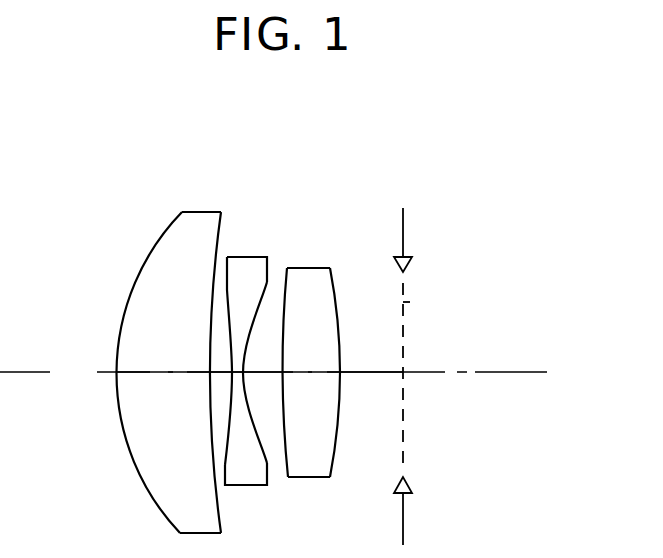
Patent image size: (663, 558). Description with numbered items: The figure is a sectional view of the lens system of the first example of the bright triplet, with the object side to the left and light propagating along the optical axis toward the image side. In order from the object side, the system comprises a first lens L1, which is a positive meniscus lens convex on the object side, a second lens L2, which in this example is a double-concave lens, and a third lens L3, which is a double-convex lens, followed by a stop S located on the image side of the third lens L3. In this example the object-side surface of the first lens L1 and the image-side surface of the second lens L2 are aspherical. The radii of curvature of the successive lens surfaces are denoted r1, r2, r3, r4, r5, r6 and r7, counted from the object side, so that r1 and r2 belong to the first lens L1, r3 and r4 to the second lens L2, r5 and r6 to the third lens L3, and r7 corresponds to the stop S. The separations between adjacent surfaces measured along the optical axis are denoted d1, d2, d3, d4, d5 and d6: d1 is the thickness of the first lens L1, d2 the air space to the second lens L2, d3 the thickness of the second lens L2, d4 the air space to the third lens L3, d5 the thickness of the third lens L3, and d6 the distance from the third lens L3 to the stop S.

The first lens L1 is at (171, 324).
The second lens L2 is at (267, 300).
The third lens L3 is at (330, 296).
The stop S is at (428, 330).
The radius of curvature of the first lens surface r1 is at (141, 268).
The radius of curvature of the second lens surface r2 is at (215, 292).
The radius of curvature of the third lens surface r3 is at (228, 288).
The radius of curvature of the fourth lens surface r4 is at (265, 293).
The radius of curvature of the fifth lens surface r5 is at (283, 293).
The radius of curvature of the sixth lens surface r6 is at (334, 290).
The radius of curvature of the stop surface r7 is at (410, 302).
The separation between the first and second lens surfaces d1 is at (148, 372).
The separation between the second and third lens surfaces d2 is at (223, 372).
The separation between the third and fourth lens surfaces d3 is at (238, 372).
The separation between the fourth and fifth lens surfaces d4 is at (266, 372).
The separation between the fifth and sixth lens surfaces d5 is at (312, 372).
The separation between the sixth surface and the stop d6 is at (380, 372).